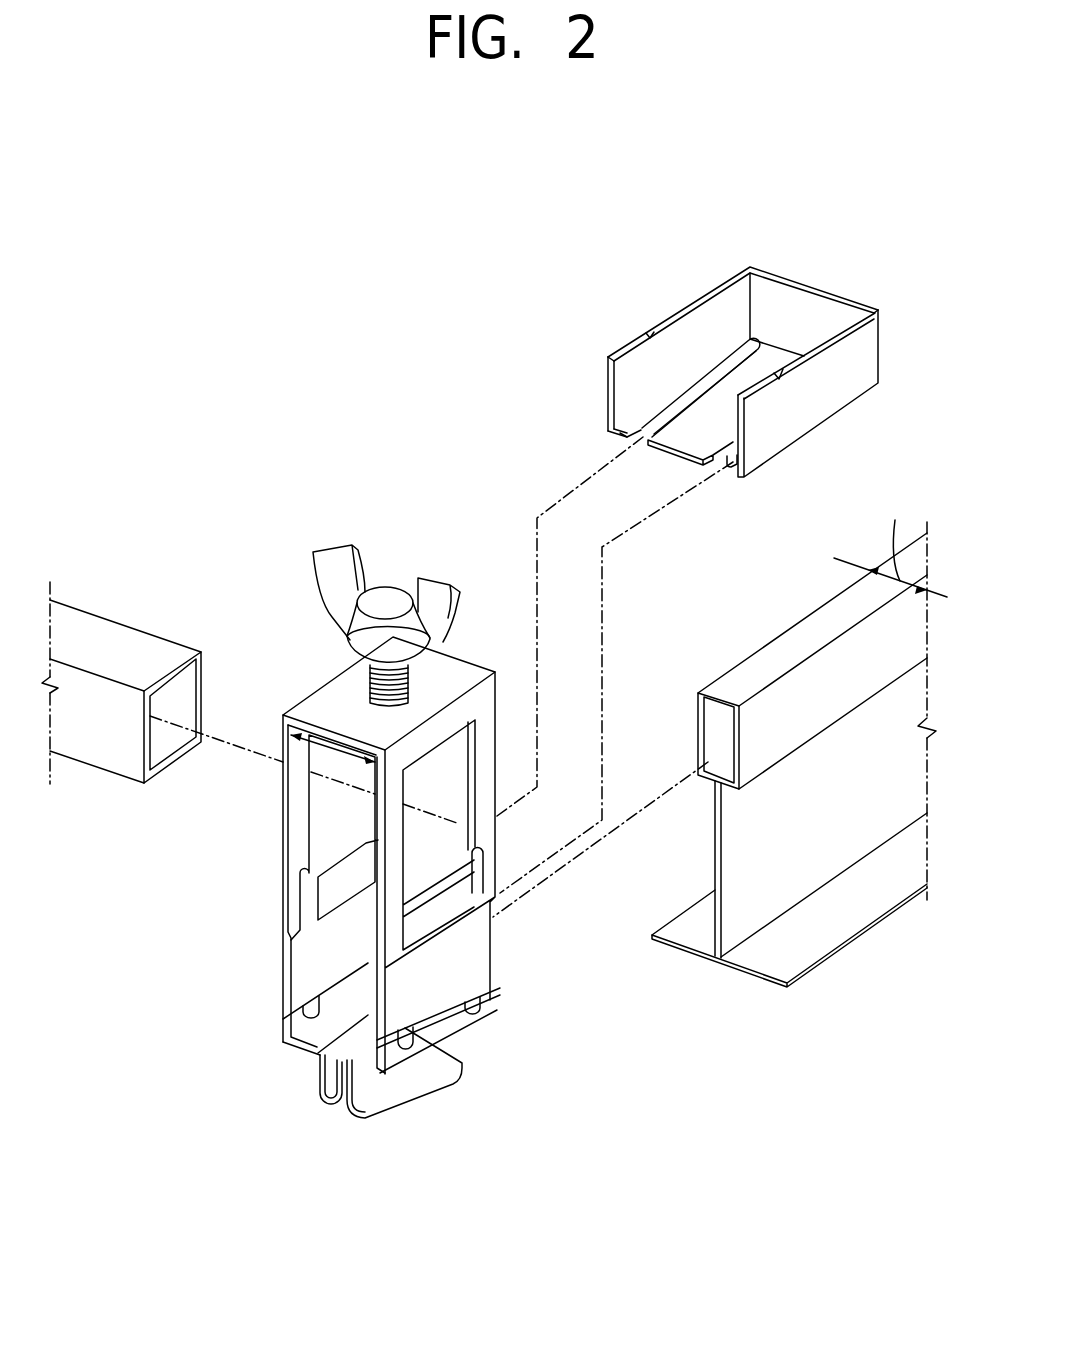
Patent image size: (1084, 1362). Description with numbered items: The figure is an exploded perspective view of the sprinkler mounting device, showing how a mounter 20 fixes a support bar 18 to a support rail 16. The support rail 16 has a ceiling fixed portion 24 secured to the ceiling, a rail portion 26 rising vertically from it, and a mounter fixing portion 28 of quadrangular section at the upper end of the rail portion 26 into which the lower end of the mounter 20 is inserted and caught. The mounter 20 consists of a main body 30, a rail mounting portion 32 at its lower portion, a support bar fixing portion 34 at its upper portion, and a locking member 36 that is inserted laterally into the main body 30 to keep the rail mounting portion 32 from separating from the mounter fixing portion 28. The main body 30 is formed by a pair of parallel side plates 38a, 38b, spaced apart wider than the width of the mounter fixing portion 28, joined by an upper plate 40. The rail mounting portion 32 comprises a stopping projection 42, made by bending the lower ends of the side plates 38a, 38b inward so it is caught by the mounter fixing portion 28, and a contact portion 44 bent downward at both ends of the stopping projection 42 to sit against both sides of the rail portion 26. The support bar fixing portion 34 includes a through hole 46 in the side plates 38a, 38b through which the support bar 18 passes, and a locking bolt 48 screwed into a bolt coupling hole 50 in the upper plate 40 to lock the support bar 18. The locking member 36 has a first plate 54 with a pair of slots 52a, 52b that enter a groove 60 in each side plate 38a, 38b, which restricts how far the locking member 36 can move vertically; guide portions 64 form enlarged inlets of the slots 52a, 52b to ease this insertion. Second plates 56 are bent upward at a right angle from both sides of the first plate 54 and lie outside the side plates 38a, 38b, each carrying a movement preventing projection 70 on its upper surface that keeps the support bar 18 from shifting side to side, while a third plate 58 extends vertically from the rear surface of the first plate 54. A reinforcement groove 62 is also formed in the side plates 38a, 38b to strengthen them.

The support rail 16 is at (794, 760).
The support bar 18 is at (118, 628).
The mounter 20 is at (393, 821).
The ceiling fixed portion 24 is at (793, 950).
The rail portion 26 is at (740, 907).
The mounter fixing portion 28 is at (808, 691).
The main body 30 is at (393, 842).
The rail mounting portion 32 is at (391, 1124).
The support bar fixing portion 34 is at (410, 605).
The locking member 36 is at (735, 358).
The side plate 38a is at (490, 830).
The side plate 38b is at (298, 802).
The upper plate 40 is at (315, 708).
The stopping projection 42 is at (366, 1093).
The contact portion 44 is at (340, 1100).
The through hole 46 is at (463, 745).
The locking bolt 48 is at (386, 575).
The bolt coupling hole 50 is at (370, 683).
The slot 52a is at (716, 380).
The slot 52b is at (735, 476).
The first plate 54 is at (680, 447).
The second plate 56 is at (630, 372).
The third plate 58 is at (800, 307).
The groove 60 is at (290, 968).
The reinforcement groove 62 is at (405, 936).
The guide portion 64 is at (642, 438).
The movement preventing projection 70 is at (649, 335).